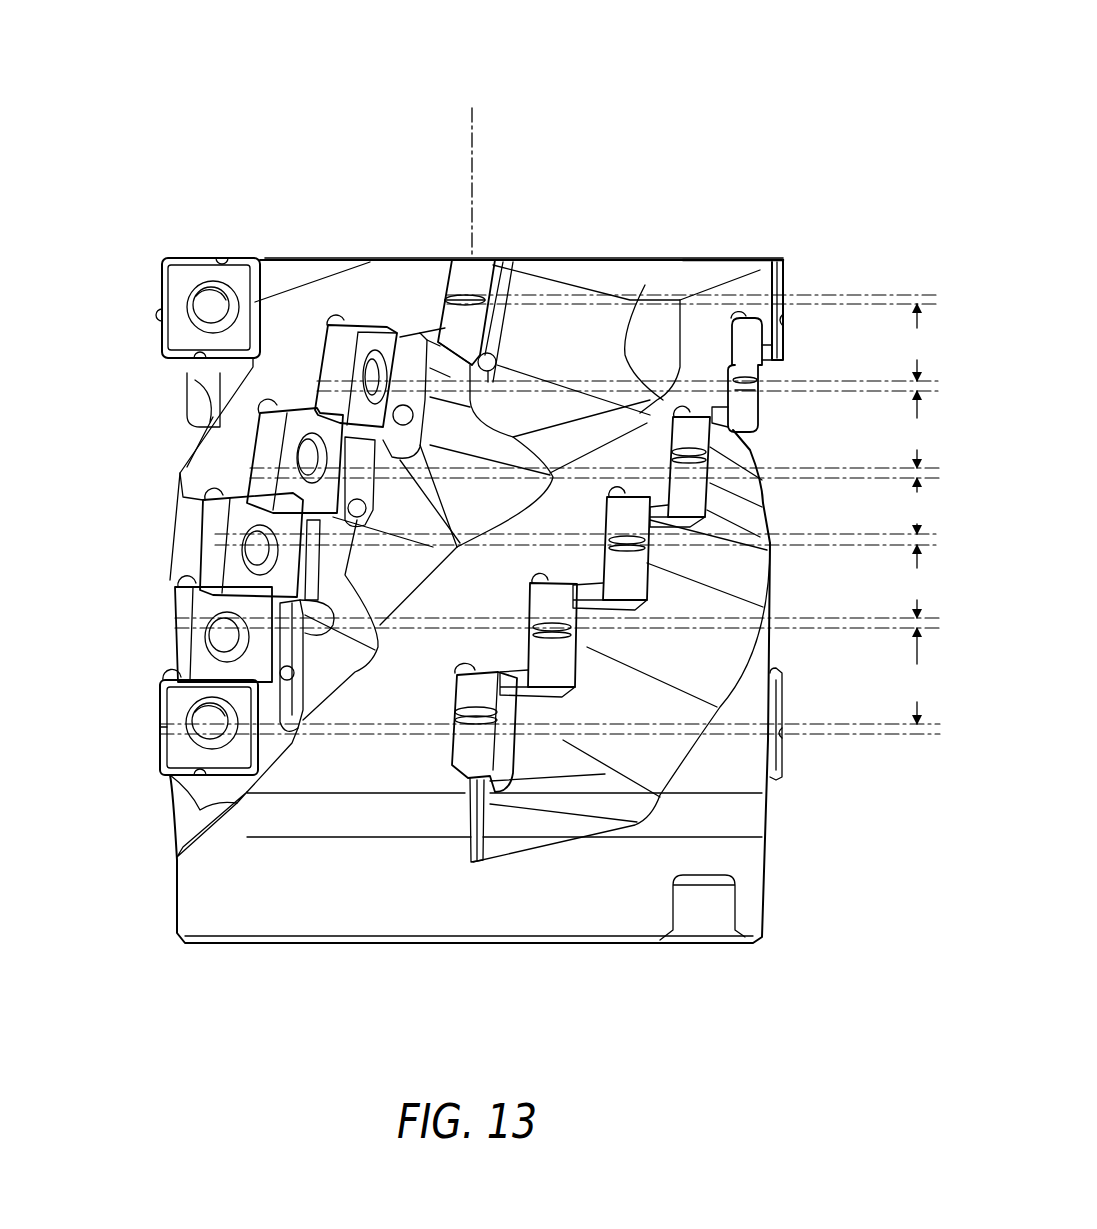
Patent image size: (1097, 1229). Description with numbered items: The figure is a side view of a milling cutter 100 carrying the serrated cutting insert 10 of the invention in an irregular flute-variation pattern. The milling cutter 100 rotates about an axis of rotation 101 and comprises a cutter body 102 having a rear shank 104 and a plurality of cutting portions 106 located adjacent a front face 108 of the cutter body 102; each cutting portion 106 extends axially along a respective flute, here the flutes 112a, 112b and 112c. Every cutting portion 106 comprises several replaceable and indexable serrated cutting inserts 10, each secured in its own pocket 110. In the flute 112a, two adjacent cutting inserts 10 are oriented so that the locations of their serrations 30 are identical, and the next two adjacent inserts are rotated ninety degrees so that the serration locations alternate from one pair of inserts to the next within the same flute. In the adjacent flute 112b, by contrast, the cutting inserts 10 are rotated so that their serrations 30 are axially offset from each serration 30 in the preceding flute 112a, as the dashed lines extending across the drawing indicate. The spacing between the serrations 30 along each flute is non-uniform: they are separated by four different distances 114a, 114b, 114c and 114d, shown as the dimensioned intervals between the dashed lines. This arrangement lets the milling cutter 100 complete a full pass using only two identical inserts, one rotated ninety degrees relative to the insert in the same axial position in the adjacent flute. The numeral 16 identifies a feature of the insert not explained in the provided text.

The milling cutter 100 is at (824, 88).
The axis of rotation 101 is at (480, 128).
The cutter body 102 is at (767, 860).
The rear shank 104 is at (200, 890).
The cutting portions 106 is at (192, 250).
The front face 108 is at (628, 253).
The pocket 110 is at (450, 298).
The flute 112a is at (670, 757).
The flute 112b is at (188, 808).
The flute 112c is at (200, 448).
The distance 114a is at (918, 506).
The distance 114b is at (918, 342).
The distance 114c is at (918, 504).
The distance 114d is at (918, 676).
The cutting insert 10 is at (766, 408).
The cutting edge 16 is at (750, 347).
The serrations 30 is at (740, 365).